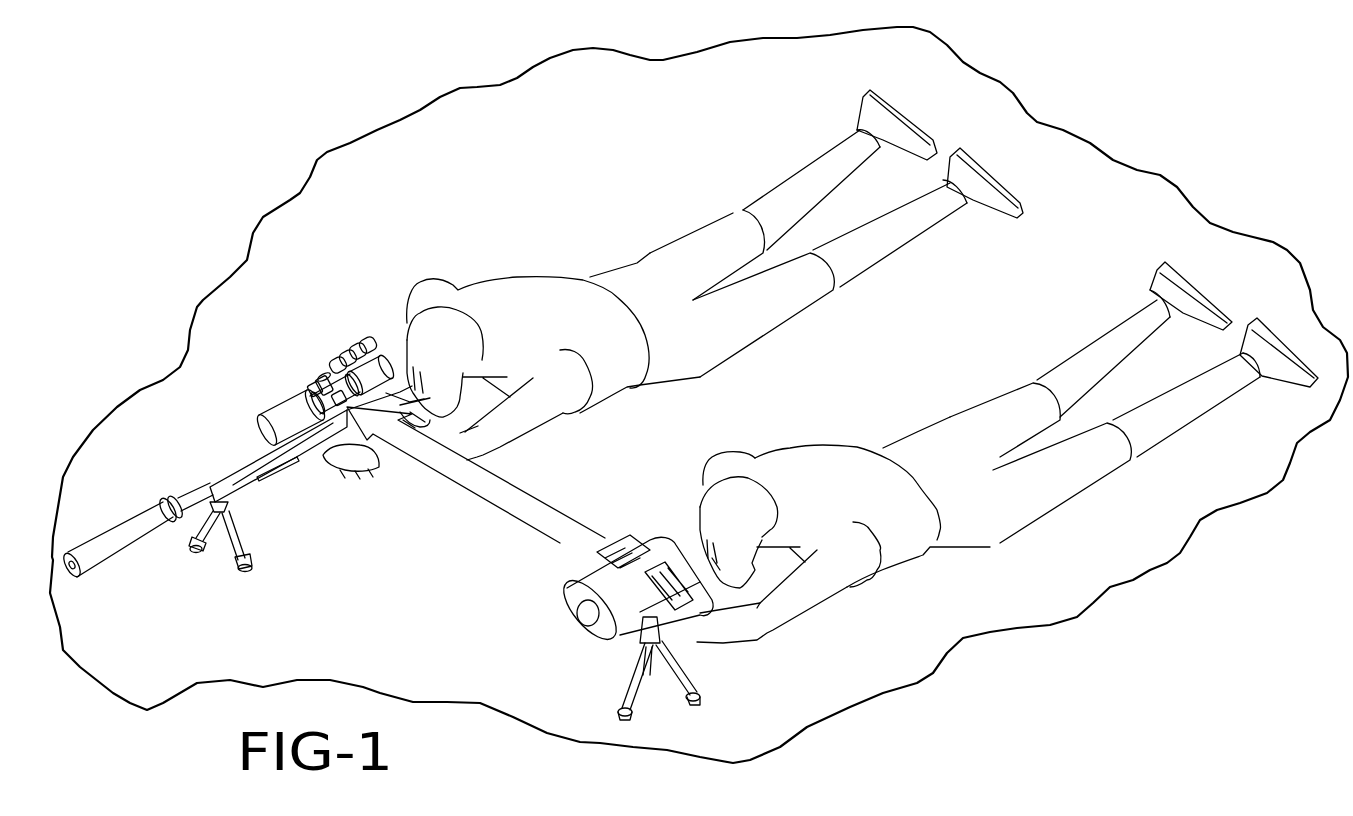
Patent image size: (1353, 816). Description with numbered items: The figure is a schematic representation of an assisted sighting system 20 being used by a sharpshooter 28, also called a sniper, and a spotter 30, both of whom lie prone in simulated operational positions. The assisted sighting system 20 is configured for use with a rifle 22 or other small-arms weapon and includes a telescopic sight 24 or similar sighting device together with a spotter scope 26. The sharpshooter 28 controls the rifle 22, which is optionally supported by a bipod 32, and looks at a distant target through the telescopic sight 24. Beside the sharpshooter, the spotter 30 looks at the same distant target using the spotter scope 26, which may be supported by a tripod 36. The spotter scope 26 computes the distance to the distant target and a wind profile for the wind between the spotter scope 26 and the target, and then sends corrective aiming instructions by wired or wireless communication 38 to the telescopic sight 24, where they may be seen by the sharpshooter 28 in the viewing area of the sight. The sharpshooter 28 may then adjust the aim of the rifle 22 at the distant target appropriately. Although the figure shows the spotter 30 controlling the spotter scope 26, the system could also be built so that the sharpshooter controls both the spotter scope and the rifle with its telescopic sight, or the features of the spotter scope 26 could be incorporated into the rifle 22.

The assisted sighting system 20 is at (327, 254).
The rifle 22 is at (213, 478).
The telescopic sight 24 is at (313, 388).
The spotter scope 26 is at (563, 610).
The sharpshooter 28 is at (537, 290).
The spotter 30 is at (834, 465).
The bipod 32 is at (248, 531).
The tripod 36 is at (623, 680).
The wired or wireless communication 38 is at (508, 488).